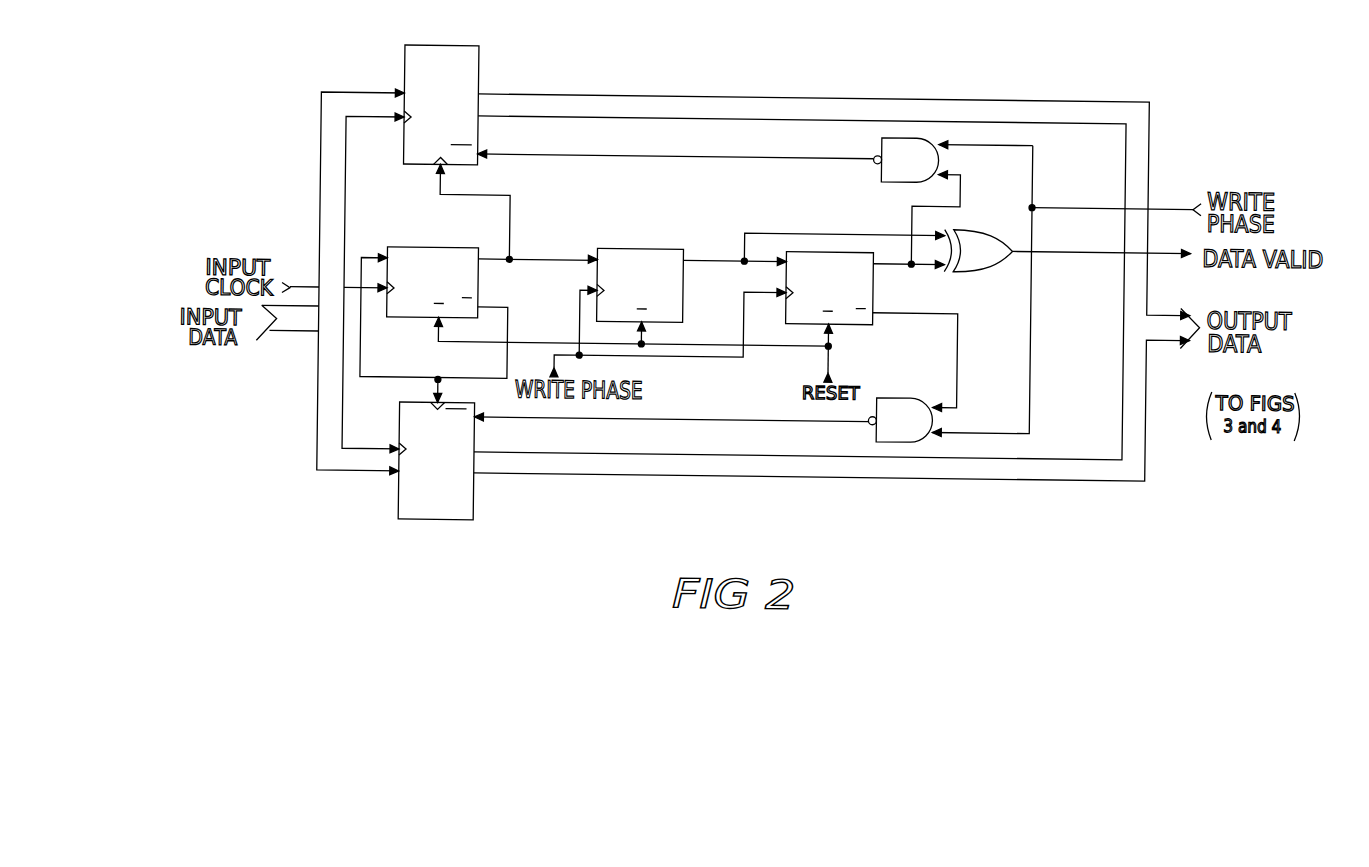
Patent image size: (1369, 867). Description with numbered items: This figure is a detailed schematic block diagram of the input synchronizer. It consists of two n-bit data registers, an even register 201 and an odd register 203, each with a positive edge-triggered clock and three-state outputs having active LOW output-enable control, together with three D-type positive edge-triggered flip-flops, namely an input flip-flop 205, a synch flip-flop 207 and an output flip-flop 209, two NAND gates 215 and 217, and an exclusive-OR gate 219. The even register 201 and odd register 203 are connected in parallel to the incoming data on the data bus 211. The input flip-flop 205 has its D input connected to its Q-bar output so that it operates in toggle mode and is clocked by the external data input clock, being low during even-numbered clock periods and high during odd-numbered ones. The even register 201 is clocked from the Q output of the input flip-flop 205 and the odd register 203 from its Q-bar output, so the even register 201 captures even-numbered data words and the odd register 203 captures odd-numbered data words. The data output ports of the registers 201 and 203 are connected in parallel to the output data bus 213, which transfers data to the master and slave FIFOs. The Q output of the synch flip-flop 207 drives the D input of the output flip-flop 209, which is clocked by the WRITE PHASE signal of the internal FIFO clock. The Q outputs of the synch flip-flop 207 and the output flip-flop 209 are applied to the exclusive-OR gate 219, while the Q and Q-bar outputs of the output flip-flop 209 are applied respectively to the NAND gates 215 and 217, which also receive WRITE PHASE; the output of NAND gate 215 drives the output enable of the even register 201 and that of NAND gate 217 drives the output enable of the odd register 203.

The even register 201 is at (435, 49).
The odd register 203 is at (403, 504).
The input flip-flop 205 is at (444, 250).
The synch flip-flop 207 is at (636, 249).
The output flip-flop 209 is at (873, 291).
The data bus 211 is at (318, 135).
The output data bus 213 is at (1041, 96).
The NAND gate 215 is at (880, 146).
The NAND gate 217 is at (894, 395).
The exclusive-OR gate 219 is at (996, 212).